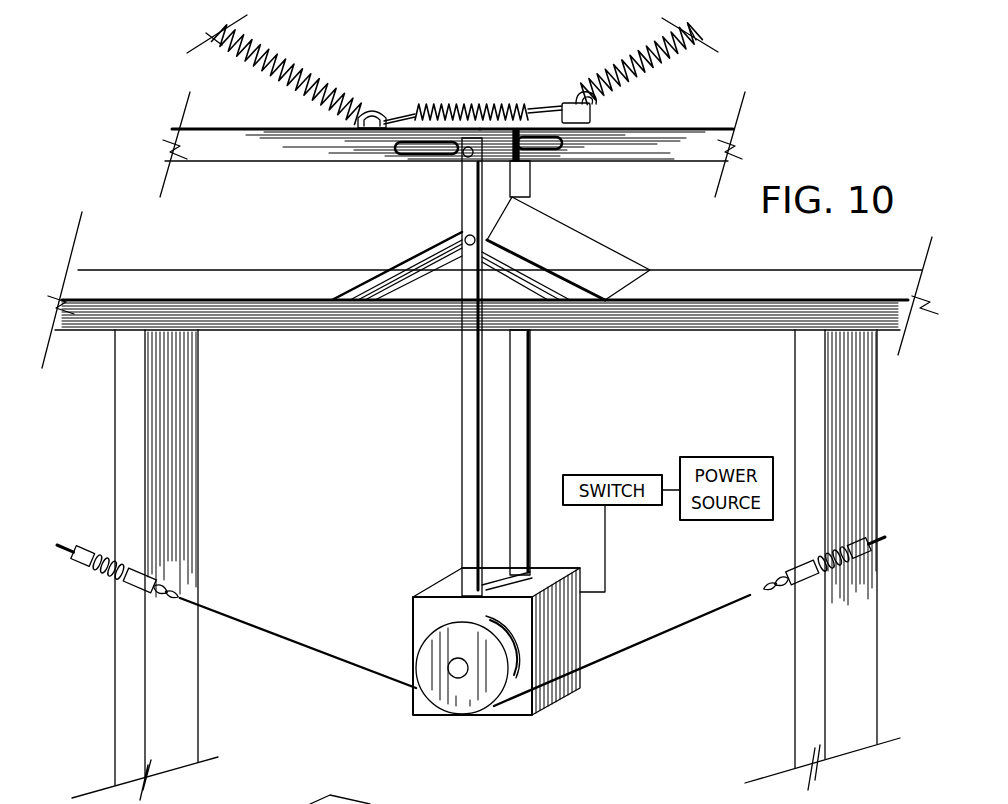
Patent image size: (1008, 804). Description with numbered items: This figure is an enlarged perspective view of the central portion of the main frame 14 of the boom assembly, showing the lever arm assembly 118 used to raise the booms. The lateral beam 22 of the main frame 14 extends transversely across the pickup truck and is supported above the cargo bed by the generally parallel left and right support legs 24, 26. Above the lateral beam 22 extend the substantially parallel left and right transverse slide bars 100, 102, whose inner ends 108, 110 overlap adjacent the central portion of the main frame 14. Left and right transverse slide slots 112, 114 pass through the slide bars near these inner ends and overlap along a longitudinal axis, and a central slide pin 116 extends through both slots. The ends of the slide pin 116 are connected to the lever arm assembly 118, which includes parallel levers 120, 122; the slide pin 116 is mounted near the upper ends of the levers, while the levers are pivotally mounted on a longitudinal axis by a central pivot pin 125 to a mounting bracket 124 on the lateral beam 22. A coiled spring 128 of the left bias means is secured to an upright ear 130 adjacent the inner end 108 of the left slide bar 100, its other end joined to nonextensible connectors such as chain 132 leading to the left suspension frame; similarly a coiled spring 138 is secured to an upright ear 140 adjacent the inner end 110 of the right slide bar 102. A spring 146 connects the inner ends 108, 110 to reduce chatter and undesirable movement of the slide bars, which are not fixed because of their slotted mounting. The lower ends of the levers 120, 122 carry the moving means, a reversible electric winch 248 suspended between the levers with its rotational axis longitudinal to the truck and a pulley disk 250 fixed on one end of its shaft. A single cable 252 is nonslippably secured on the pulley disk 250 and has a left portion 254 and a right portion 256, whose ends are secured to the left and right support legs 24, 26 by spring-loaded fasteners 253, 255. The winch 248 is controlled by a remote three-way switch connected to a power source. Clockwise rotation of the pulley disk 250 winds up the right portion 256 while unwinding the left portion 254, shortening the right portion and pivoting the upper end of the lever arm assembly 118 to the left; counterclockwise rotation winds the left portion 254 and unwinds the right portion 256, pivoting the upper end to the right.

The main frame 14 is at (703, 264).
The lateral beam 22 is at (690, 328).
The left support leg 24 is at (113, 438).
The right support leg 26 is at (882, 462).
The left transverse slide bar 100 is at (268, 158).
The right transverse slide bar 102 is at (713, 150).
The inner end of left slide bar 108 is at (530, 143).
The inner end of right slide bar 110 is at (406, 119).
The left transverse slide slot 112 is at (408, 150).
The right transverse slide slot 114 is at (516, 133).
The central slide pin 116 is at (466, 158).
The lever arm assembly 118 is at (432, 367).
The lever 120 is at (470, 475).
The lever 122 is at (520, 396).
The mounting bracket 124 is at (590, 250).
The central pivot pin 125 is at (464, 241).
The coiled spring 128 is at (287, 60).
The upright ear 130 is at (373, 108).
The chain 132 is at (622, 803).
The coiled spring 138 is at (627, 58).
The upright ear 140 is at (582, 92).
The spring 146 is at (455, 101).
The electric winch 248 is at (410, 720).
The pulley disk 250 is at (474, 692).
The cable 252 is at (376, 658).
The spring-loaded fastener 253 is at (140, 565).
The left portion of cable 254 is at (332, 657).
The spring-loaded fastener 255 is at (805, 565).
The right portion of cable 256 is at (592, 662).